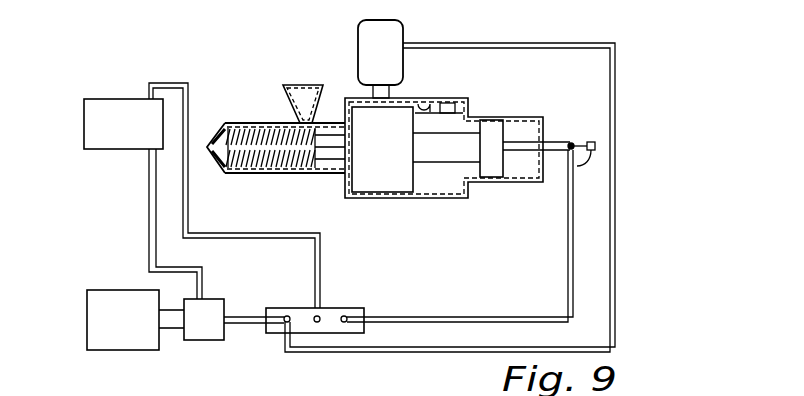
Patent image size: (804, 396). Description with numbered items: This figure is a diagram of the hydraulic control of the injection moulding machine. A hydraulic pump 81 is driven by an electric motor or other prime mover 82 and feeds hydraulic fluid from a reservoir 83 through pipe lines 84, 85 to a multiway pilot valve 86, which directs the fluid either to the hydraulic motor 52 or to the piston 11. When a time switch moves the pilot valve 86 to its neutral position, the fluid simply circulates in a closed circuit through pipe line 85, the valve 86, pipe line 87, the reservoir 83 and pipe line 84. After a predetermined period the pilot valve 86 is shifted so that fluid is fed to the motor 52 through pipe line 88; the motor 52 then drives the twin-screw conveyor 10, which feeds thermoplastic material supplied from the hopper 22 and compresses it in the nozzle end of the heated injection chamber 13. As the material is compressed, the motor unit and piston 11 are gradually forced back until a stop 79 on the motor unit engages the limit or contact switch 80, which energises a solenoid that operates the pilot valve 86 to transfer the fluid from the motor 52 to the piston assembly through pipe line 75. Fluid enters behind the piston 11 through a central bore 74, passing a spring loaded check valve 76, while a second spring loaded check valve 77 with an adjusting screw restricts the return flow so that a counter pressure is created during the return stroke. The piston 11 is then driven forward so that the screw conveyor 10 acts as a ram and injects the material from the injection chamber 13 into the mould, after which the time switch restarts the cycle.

The twin-screw conveyor 10 is at (242, 128).
The piston 11 is at (492, 130).
The injection chamber 13 is at (285, 175).
The hopper 22 is at (306, 93).
The hydraulic motor 52 is at (368, 43).
The central bore 74 is at (553, 145).
The pipe line 75 is at (568, 222).
The spring loaded check valve 76 is at (575, 145).
The second spring loaded check valve 77 is at (593, 152).
The stop 79 is at (424, 105).
The limit or contact switch 80 is at (446, 102).
The hydraulic pump 81 is at (198, 340).
The prime mover 82 is at (128, 335).
The reservoir 83 is at (113, 112).
The pipe line 84 is at (149, 233).
The pipe line 85 is at (263, 317).
The multiway pilot valve 86 is at (333, 308).
The pipe line 87 is at (262, 233).
The pipe line 88 is at (400, 352).